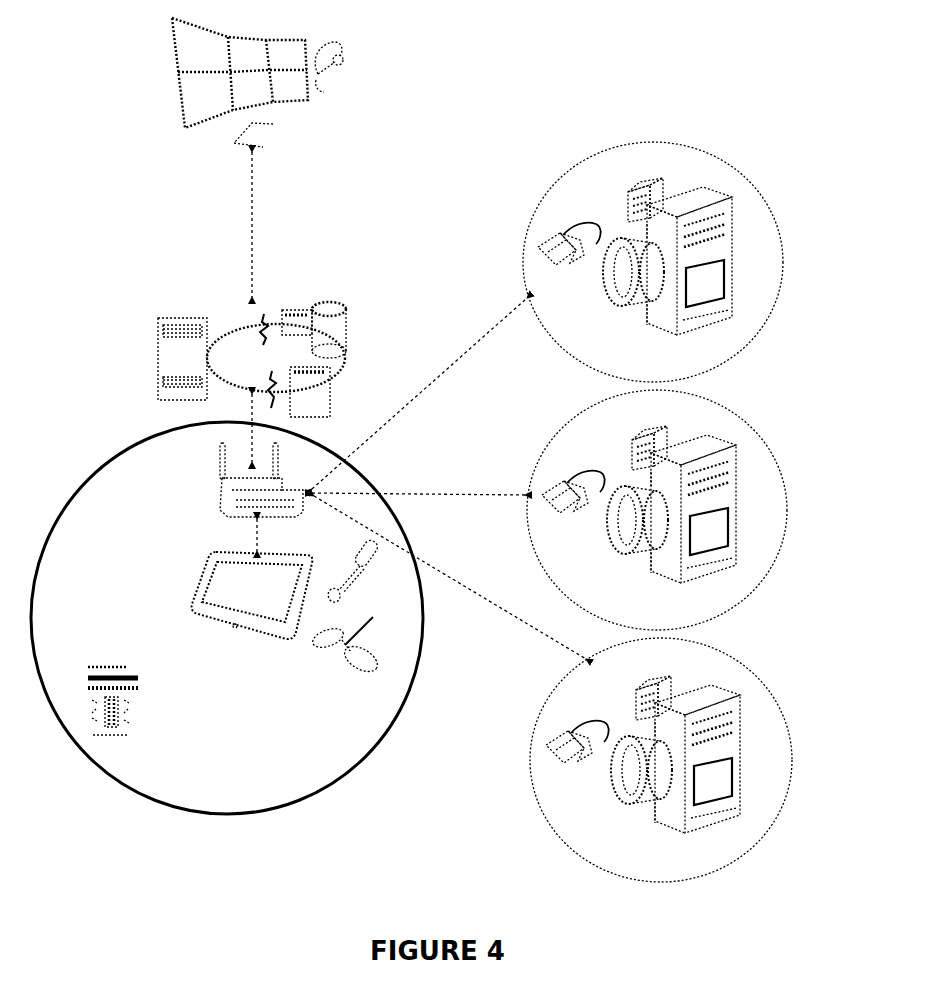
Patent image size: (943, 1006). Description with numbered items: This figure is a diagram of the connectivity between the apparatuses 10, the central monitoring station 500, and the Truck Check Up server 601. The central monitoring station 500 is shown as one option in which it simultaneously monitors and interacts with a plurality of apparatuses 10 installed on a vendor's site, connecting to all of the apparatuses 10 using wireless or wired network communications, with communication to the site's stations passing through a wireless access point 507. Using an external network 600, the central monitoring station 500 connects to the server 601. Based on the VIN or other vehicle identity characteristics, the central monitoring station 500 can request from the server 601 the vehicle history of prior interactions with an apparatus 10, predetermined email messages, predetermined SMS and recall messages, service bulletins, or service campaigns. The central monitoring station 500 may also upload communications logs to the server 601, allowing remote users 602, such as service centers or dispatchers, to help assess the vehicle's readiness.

The remote users 602 is at (324, 78).
The external network 600 is at (238, 328).
The server 601 is at (155, 320).
The wireless access point 507 is at (205, 476).
The central monitoring station 500 is at (218, 817).
The apparatuses 10 is at (783, 262).